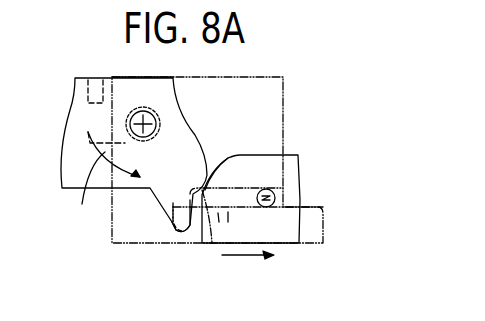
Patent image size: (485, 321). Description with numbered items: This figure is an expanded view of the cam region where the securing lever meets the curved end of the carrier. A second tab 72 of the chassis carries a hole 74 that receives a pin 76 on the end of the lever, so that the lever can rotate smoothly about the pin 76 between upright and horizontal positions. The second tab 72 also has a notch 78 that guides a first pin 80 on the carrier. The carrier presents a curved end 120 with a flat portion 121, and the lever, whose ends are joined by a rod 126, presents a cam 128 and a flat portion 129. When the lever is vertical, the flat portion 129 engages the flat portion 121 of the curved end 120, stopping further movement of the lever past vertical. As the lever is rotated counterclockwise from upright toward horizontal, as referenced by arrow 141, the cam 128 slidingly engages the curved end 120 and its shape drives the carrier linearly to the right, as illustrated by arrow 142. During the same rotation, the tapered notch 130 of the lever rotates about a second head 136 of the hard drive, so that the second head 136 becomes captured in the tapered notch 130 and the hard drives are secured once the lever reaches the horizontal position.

The second tab 72 is at (250, 78).
The hole 74 is at (150, 141).
The pin 76 is at (157, 120).
The notch 78 is at (212, 243).
The first pin 80 is at (273, 194).
The curved end 120 is at (188, 234).
The flat portion 121 is at (258, 155).
The rod 126 is at (178, 233).
The cam 128 is at (219, 162).
The flat portion 129 is at (172, 82).
The tapered notch 130 is at (102, 80).
The second head 136 is at (153, 108).
The arrow 141 is at (84, 189).
The arrow 142 is at (267, 258).